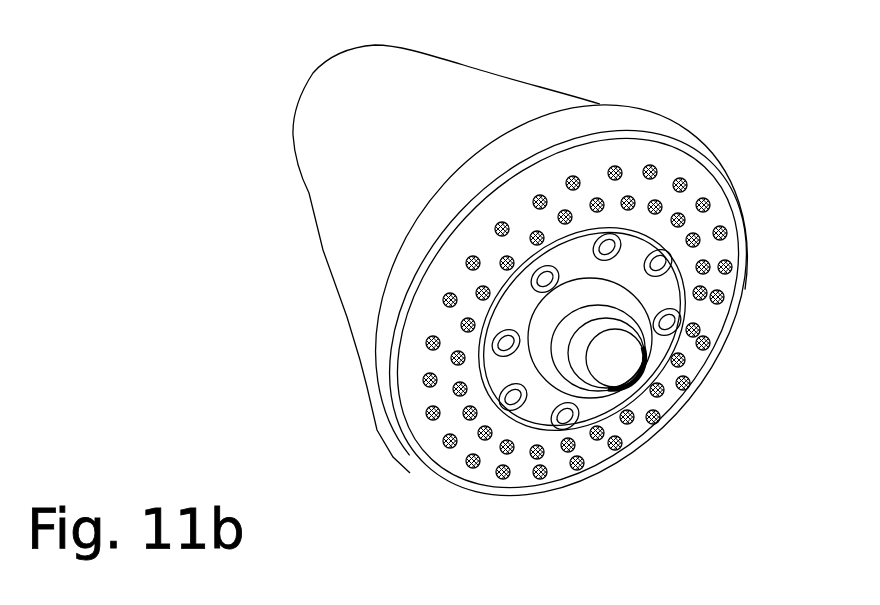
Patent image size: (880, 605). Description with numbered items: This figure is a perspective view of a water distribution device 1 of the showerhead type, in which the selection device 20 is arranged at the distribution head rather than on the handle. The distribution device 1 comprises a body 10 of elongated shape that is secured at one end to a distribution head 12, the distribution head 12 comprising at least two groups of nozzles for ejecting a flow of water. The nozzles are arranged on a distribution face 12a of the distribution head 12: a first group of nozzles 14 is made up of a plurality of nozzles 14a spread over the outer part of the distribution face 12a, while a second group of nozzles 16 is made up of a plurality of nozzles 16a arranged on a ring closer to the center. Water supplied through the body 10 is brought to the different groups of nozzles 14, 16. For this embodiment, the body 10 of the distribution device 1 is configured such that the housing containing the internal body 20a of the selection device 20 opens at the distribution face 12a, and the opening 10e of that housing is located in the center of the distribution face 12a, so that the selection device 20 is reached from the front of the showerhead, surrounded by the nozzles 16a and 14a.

The water distribution device 1 is at (268, 355).
The body 10 is at (326, 190).
The opening 10e is at (636, 299).
The distribution head 12 is at (378, 388).
The distribution face 12a is at (415, 420).
The group of nozzles 14 is at (486, 487).
The nozzles 14a is at (664, 427).
The group of nozzles 16 is at (541, 425).
The nozzles 16a is at (603, 242).
The selection device 20 is at (613, 408).
The internal body 20a is at (620, 357).